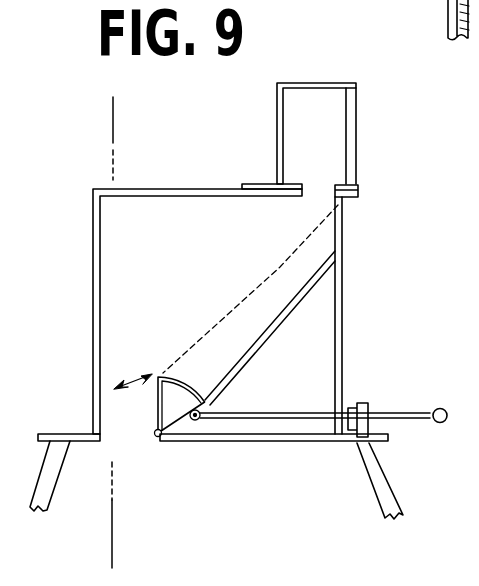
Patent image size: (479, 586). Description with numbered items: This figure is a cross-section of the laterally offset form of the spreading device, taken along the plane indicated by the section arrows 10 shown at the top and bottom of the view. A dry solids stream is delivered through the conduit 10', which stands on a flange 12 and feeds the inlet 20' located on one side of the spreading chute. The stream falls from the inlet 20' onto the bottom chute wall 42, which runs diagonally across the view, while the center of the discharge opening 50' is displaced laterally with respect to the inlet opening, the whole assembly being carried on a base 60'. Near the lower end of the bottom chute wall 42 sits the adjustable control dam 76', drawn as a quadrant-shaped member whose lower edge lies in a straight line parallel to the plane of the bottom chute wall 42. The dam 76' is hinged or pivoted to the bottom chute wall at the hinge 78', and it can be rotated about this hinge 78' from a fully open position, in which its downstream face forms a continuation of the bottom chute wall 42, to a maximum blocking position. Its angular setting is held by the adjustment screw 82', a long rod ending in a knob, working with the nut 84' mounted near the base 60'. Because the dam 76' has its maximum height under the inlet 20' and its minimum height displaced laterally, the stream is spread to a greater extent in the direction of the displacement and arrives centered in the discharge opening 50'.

The section line 10 is at (71, 336).
The conduit 10' is at (355, 133).
The post base flange 12 is at (252, 185).
The inlet 20' is at (376, 293).
The bottom chute wall 42 is at (280, 333).
The discharge opening 50' is at (166, 350).
The base plate with leg 60' is at (304, 476).
The adjustable dam 76' is at (159, 434).
The hinge 78' is at (202, 451).
The adjustment screw 82' is at (326, 395).
The nut 84' is at (341, 450).